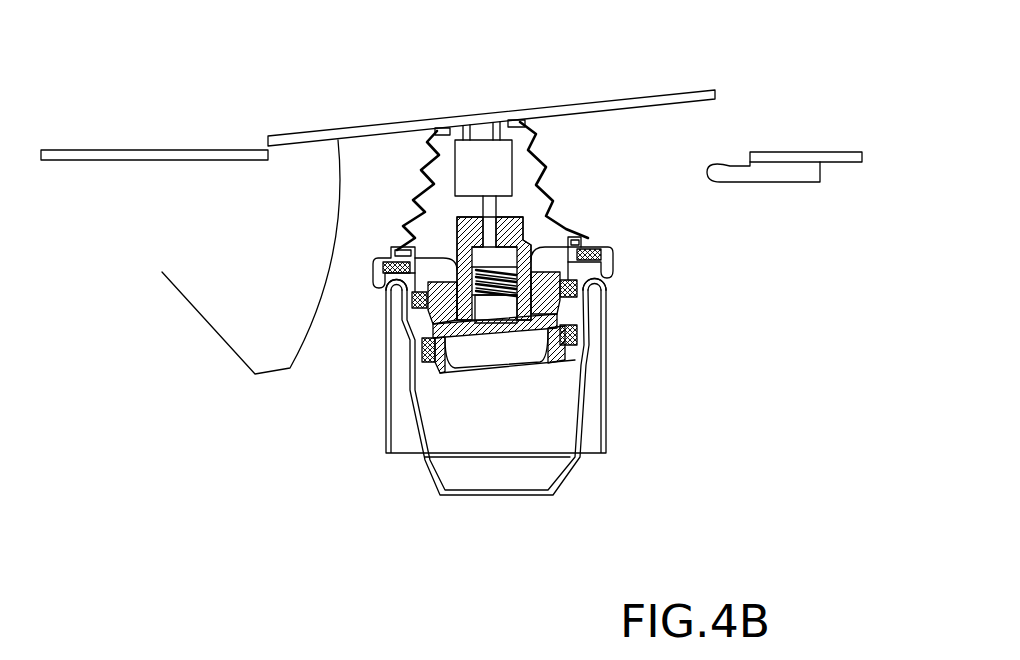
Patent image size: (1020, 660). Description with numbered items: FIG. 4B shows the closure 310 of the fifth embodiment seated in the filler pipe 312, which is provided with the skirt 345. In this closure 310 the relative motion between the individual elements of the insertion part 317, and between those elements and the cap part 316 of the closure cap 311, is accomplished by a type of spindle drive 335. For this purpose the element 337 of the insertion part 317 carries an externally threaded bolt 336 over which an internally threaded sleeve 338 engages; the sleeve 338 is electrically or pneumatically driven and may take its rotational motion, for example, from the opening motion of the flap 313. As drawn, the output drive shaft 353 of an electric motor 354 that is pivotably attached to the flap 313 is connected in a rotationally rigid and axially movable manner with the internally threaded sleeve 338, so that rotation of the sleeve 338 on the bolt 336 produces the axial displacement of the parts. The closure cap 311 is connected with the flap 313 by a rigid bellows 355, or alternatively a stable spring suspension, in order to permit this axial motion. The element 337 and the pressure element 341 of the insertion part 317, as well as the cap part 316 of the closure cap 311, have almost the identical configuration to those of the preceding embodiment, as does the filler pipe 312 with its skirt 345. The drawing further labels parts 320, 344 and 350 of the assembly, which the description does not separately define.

The closure 310 is at (783, 270).
The closure cap 311 is at (620, 249).
The filler pipe 312 is at (607, 417).
The flap 313 is at (715, 93).
The cap part 316 is at (588, 238).
The insertion part 317 is at (445, 372).
The clip 320 is at (412, 298).
The spindle drive 335 is at (438, 205).
The externally threaded bolt 336 is at (505, 318).
The element 337 is at (433, 372).
The internally threaded sleeve 338 is at (457, 222).
The pressure element 341 is at (572, 316).
The seal 344 is at (590, 342).
The skirt 345 is at (430, 477).
The seal 350 is at (562, 283).
The output drive shaft 353 is at (497, 212).
The electric motor 354 is at (507, 173).
The rigid bellows 355 is at (537, 131).